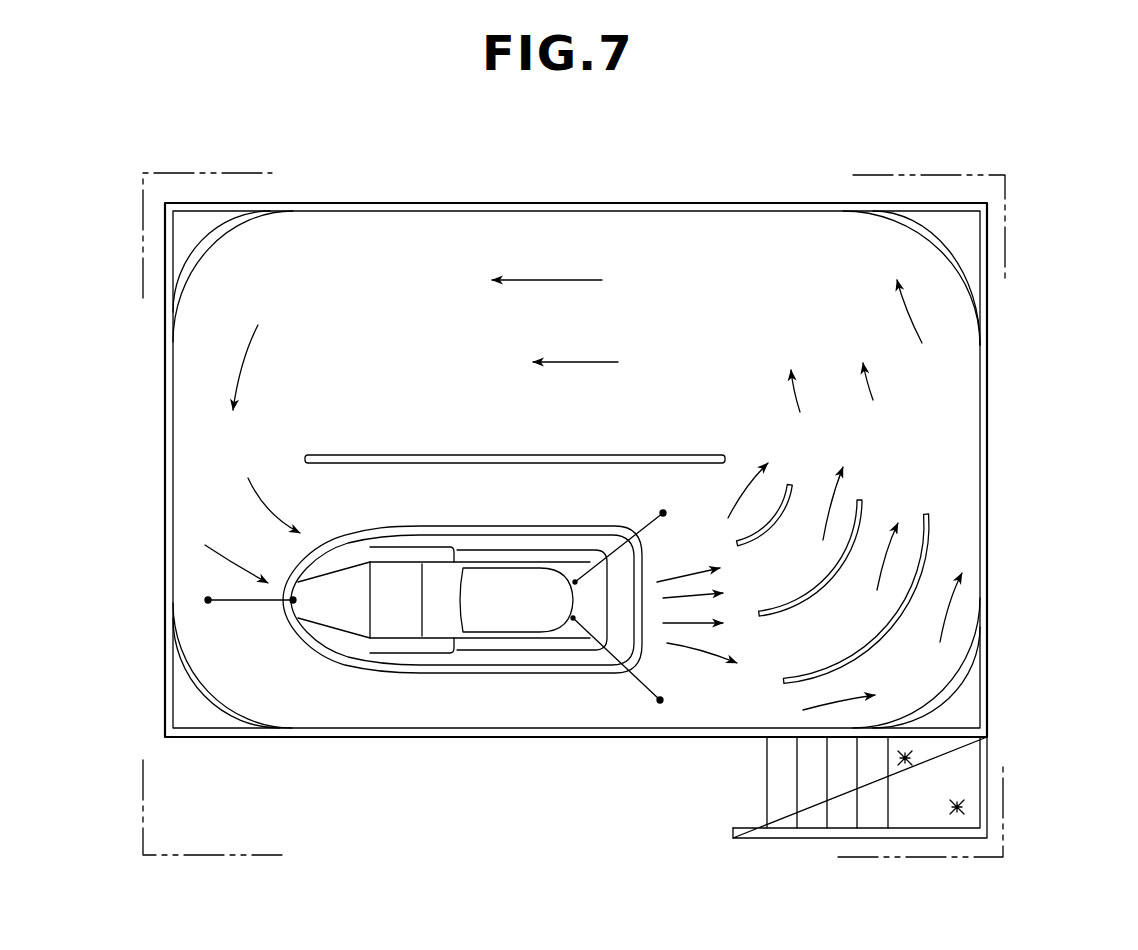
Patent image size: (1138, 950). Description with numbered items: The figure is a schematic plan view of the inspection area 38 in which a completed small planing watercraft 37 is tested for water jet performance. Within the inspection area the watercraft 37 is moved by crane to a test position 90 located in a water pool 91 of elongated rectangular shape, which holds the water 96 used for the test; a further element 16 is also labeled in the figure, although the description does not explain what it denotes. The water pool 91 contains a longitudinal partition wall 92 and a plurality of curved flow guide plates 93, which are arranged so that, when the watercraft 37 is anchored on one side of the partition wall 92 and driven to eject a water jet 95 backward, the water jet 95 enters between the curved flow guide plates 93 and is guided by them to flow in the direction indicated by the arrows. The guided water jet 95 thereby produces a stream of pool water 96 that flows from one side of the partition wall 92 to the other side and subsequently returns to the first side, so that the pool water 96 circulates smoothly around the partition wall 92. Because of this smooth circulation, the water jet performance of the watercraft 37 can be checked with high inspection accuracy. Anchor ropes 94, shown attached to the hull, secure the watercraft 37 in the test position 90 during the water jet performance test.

The test position 90 is at (312, 178).
The water pool 91 is at (736, 204).
The inspection area 38 is at (950, 172).
The corner guide wall 16 is at (955, 352).
The water 96 is at (366, 326).
The longitudinal partition wall 92 is at (485, 455).
The curved flow guide plates 93 is at (790, 485).
The anchor ropes 94 is at (632, 500).
The water jet 95 is at (703, 652).
The small planing watercraft 37 is at (498, 663).